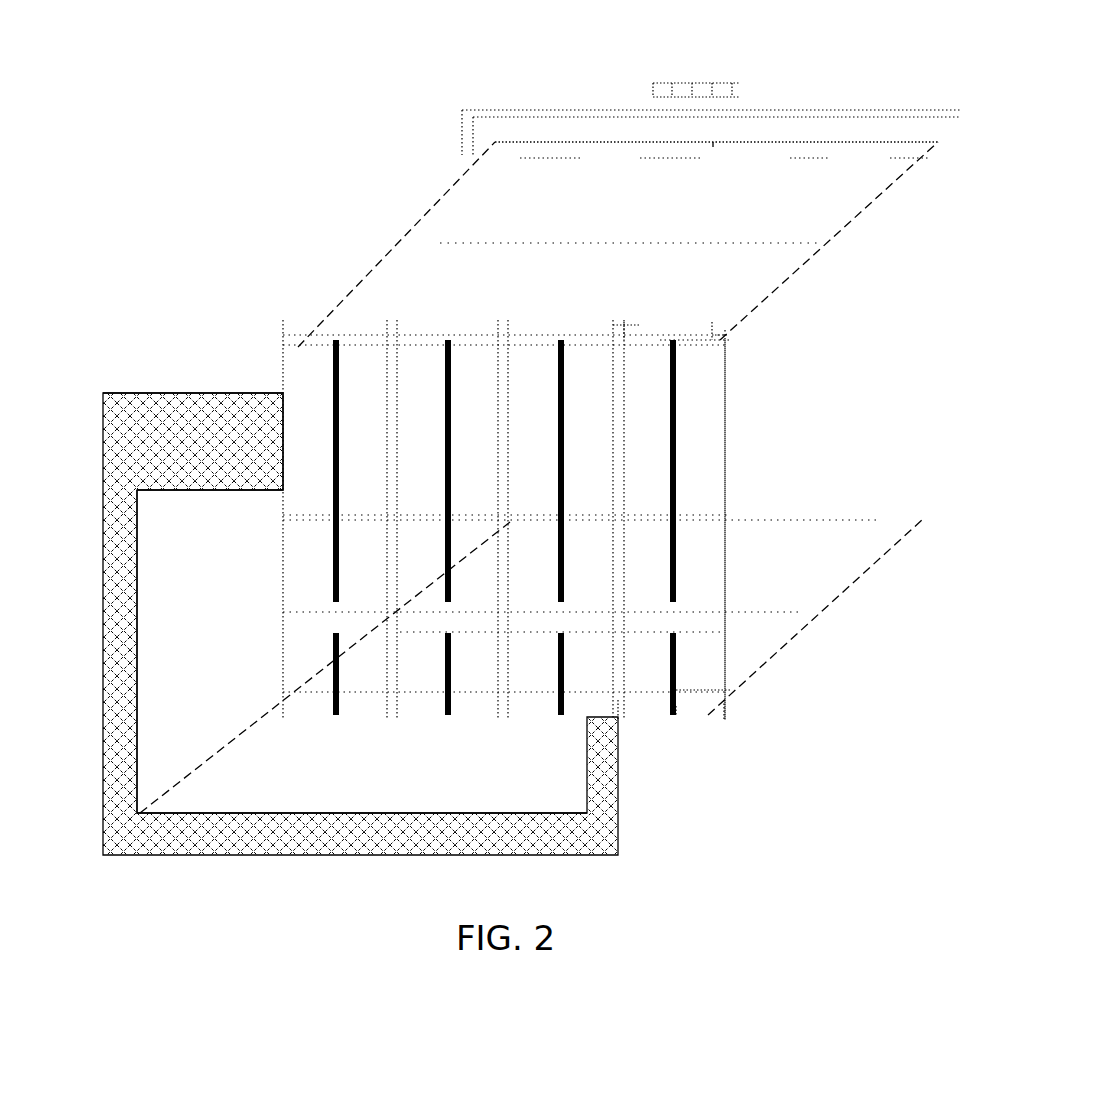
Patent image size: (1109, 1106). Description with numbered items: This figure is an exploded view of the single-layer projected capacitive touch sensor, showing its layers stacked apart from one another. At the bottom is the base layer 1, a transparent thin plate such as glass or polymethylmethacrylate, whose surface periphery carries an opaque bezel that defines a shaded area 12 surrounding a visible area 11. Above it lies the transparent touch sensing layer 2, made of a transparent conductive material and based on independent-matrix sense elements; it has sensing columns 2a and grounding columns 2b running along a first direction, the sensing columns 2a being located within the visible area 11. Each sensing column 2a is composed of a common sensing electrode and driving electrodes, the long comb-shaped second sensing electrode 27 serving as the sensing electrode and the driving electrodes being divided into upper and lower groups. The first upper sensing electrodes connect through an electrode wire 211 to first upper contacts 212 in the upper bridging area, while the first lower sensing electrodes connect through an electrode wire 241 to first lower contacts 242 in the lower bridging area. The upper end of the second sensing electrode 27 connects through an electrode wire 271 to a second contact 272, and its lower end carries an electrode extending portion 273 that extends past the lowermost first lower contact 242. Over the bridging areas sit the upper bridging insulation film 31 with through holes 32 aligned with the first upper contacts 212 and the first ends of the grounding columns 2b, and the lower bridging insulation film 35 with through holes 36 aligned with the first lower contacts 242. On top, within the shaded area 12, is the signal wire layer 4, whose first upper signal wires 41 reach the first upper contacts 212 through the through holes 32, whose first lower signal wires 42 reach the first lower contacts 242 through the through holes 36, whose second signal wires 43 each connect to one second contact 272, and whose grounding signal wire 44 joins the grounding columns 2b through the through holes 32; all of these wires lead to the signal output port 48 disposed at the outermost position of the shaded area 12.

The base layer 1 is at (154, 391).
The visible area 11 is at (165, 556).
The shaded area 12 is at (138, 446).
The transparent touch sensing layer 2 is at (540, 520).
The sensing columns 2a is at (468, 334).
The grounding columns 2b is at (500, 335).
The second sensing electrode 27 is at (722, 497).
The electrode wire 211 is at (676, 357).
The first upper contacts 212 is at (688, 340).
The electrode wire 241 is at (680, 692).
The first lower contacts 242 is at (690, 710).
The electrode wire 271 is at (625, 338).
The second contact 272 is at (638, 322).
The electrode extending portion 273 is at (627, 703).
The upper bridging insulation film 31 is at (383, 247).
The through holes 32 is at (518, 247).
The lower bridging insulation film 35 is at (840, 617).
The through holes 36 is at (795, 606).
The signal wire layer 4 is at (900, 93).
The first upper signal wires 41 is at (580, 151).
The first lower signal wires 42 is at (852, 518).
The second signal wires 43 is at (818, 132).
The grounding signal wire 44 is at (713, 143).
The signal output port 48 is at (742, 82).